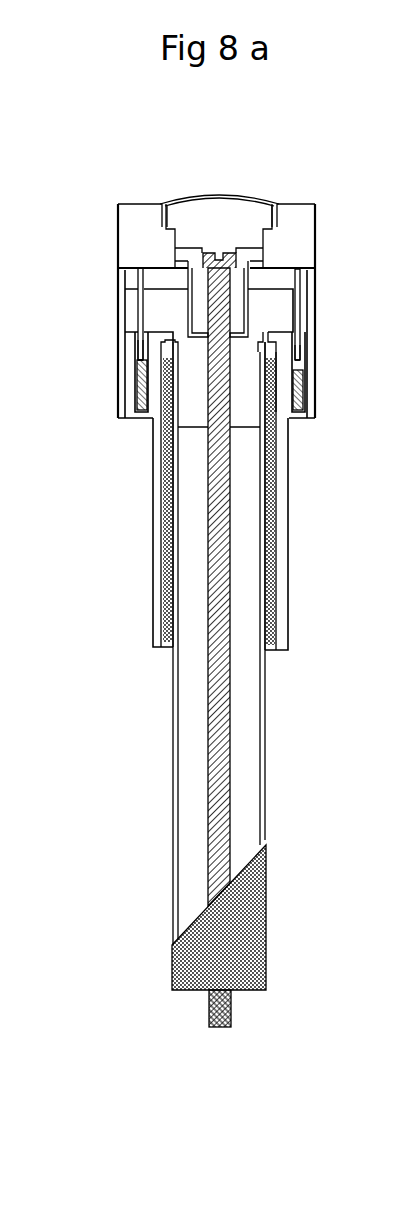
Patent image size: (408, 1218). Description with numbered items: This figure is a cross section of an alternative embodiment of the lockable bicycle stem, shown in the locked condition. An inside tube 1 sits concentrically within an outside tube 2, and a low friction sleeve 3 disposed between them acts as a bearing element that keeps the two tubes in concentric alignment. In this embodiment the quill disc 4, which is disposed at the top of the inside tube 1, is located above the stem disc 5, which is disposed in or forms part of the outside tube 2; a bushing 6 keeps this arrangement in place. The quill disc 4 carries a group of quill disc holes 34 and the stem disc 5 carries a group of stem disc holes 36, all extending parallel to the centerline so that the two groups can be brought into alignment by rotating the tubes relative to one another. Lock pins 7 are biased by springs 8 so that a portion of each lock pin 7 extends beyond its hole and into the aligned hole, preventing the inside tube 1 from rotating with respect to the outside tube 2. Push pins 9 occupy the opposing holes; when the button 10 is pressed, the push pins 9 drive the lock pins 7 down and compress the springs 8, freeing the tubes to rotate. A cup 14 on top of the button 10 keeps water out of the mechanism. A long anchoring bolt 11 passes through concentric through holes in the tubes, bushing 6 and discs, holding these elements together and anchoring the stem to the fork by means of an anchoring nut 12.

The inside tube 1 is at (264, 783).
The outside tube 2 is at (282, 640).
The low friction sleeve 3 is at (271, 575).
The quill disc 4 is at (267, 314).
The stem disc 5 is at (282, 362).
The bushing 6 is at (237, 297).
The lock pin 7 is at (140, 344).
The spring 8 is at (299, 403).
The push pin 9 is at (142, 277).
The button 10 is at (292, 228).
The anchoring bolt 11 is at (219, 848).
The anchoring nut 12 is at (236, 938).
The cup 14 is at (217, 199).
The quill disc hole 34 is at (138, 304).
The stem disc hole 36 is at (140, 405).